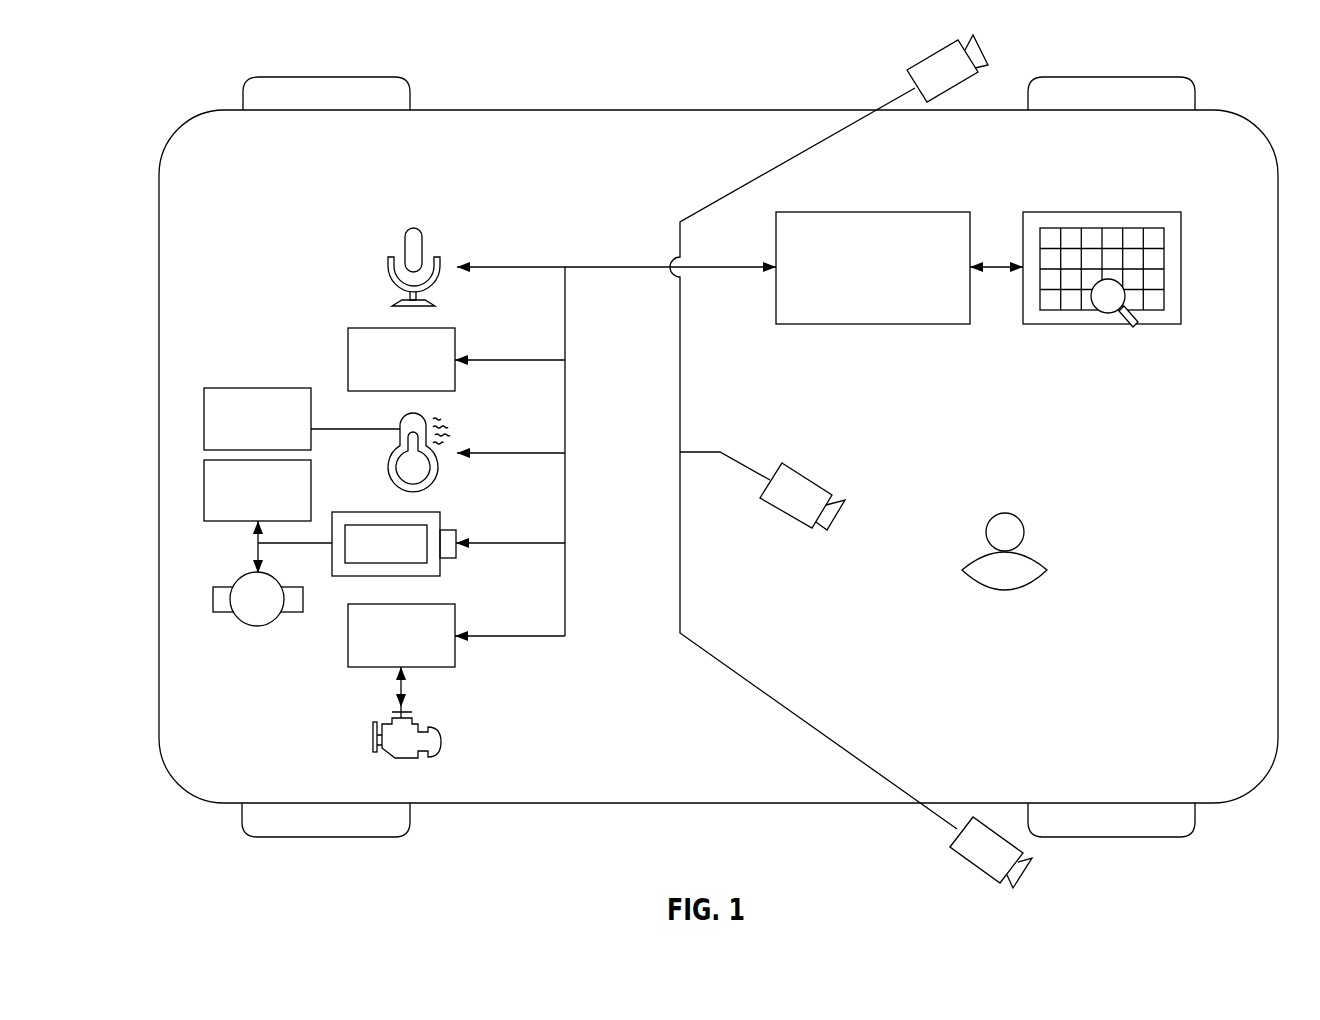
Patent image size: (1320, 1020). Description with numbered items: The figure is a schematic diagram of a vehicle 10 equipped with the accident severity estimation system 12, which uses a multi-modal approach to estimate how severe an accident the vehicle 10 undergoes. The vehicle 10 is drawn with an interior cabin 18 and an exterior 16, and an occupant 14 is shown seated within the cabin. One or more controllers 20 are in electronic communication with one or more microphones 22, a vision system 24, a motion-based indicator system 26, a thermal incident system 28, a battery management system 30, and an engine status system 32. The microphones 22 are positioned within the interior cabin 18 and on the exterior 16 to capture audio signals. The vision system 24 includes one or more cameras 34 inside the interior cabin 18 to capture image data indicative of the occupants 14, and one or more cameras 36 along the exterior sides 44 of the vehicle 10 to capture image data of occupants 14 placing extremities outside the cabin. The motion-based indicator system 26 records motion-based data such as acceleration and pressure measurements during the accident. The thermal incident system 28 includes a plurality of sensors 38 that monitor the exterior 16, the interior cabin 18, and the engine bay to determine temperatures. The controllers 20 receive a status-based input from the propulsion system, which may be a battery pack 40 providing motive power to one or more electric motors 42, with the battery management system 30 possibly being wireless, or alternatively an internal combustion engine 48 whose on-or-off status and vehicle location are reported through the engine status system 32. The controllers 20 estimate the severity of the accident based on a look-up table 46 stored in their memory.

The vehicle 10 is at (852, 803).
The accident severity estimation system 12 is at (1065, 143).
The occupant 14 is at (1035, 550).
The exterior 16 is at (552, 100).
The interior cabin 18 is at (245, 148).
The controller 20 is at (888, 282).
The microphone 22 is at (425, 248).
The vision system 24 is at (732, 425).
The motion-based indicator system 26 is at (416, 374).
The thermal incident system 28 is at (458, 425).
The battery management system 30 is at (443, 520).
The engine status system 32 is at (416, 650).
The camera 34 is at (807, 480).
The camera 36 is at (930, 55).
The sensor 38 is at (272, 433).
The battery pack 40 is at (272, 505).
The electric motor 42 is at (265, 625).
The exterior side 44 is at (852, 110).
The look-up table 46 is at (1102, 212).
The internal combustion engine 48 is at (410, 760).